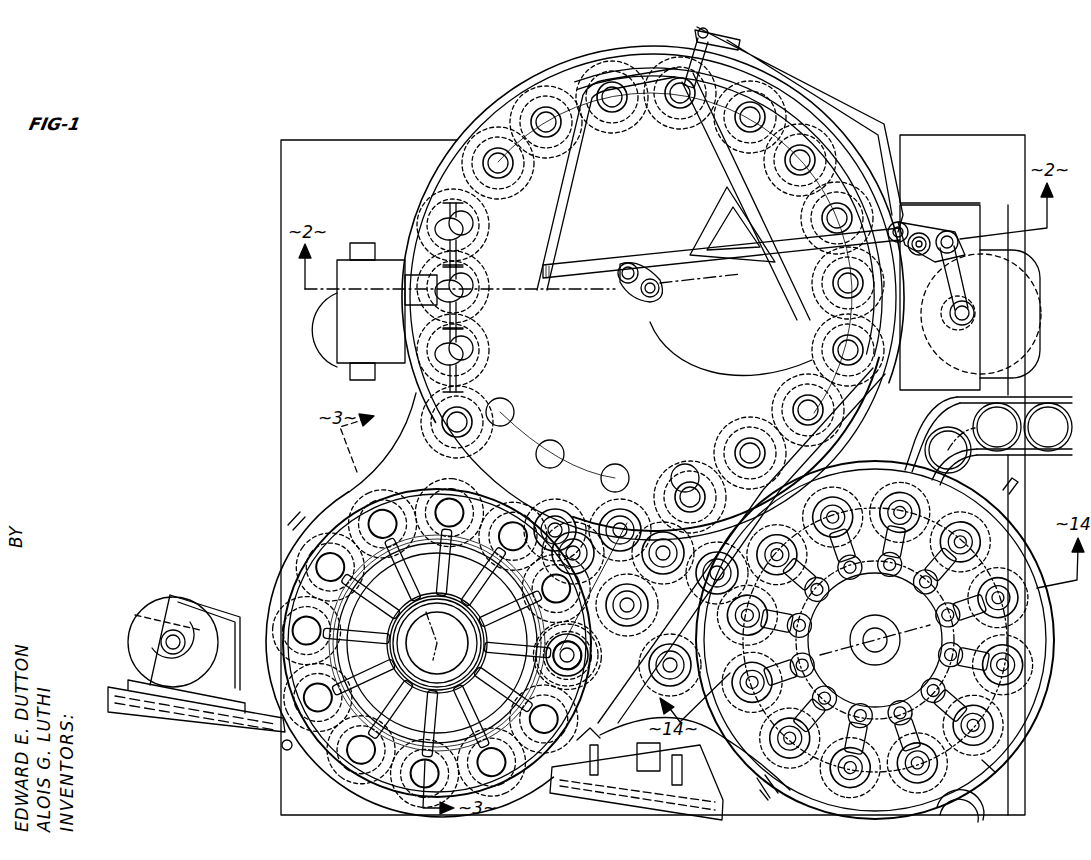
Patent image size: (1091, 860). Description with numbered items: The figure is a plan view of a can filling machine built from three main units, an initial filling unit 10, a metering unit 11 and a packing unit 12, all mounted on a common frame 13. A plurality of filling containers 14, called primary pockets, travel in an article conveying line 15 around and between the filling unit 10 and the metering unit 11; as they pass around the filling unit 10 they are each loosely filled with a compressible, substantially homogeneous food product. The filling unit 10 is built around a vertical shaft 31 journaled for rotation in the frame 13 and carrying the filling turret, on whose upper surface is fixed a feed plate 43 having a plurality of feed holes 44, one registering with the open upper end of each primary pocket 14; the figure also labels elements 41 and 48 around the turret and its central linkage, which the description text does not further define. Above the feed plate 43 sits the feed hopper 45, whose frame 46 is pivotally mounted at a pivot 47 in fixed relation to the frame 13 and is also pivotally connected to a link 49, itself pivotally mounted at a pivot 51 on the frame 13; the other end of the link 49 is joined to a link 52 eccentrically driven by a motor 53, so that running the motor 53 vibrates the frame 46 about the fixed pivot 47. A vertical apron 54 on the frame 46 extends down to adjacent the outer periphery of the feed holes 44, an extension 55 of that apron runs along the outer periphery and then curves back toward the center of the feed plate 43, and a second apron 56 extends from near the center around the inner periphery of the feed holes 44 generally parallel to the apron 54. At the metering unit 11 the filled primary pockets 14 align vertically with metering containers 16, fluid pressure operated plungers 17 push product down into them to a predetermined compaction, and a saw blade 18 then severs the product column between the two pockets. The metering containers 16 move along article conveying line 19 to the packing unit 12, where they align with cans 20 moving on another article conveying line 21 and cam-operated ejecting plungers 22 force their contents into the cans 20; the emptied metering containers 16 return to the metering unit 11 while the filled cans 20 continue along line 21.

The initial filling unit 10 is at (470, 132).
The metering unit 11 is at (325, 500).
The packing unit 12 is at (1062, 722).
The common frame 13 is at (281, 384).
The filling containers (primary pockets) 14 is at (540, 92).
The article conveying line 15 is at (405, 440).
The metering containers (metering pockets) 16 is at (570, 555).
The fluid pressure operated plungers 17 is at (302, 612).
The saw blade 18 is at (292, 762).
The article conveying line 19 is at (882, 465).
The cans 20 is at (940, 440).
The article conveying line 21 is at (955, 402).
The cam-operated ejecting plungers 22 is at (935, 652).
The vertical shaft 31 is at (657, 290).
The pushers 41 is at (430, 390).
The feed plate 43 is at (618, 414).
The feed holes 44 is at (620, 468).
The feed hopper 45 is at (862, 95).
The frame 46 is at (765, 245).
The pivot 47 is at (745, 45).
The pivot 48 is at (632, 293).
The link 49 is at (918, 230).
The pivot 51 is at (918, 252).
The link 52 is at (970, 292).
The motor 53 is at (1032, 360).
The vertical apron 54 is at (843, 177).
The extension 55 is at (568, 225).
The second apron 56 is at (775, 162).